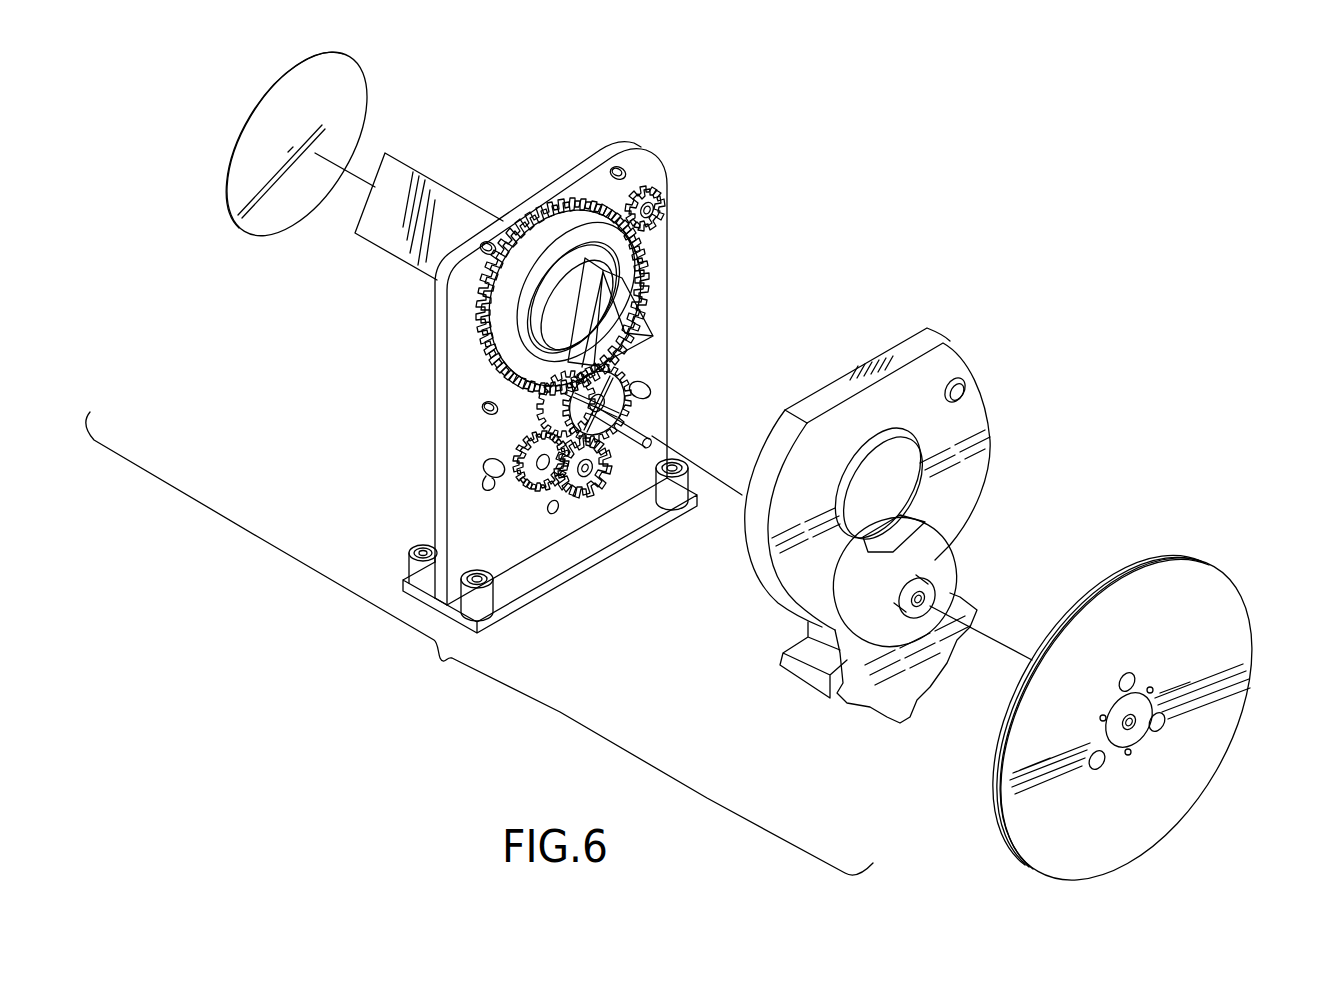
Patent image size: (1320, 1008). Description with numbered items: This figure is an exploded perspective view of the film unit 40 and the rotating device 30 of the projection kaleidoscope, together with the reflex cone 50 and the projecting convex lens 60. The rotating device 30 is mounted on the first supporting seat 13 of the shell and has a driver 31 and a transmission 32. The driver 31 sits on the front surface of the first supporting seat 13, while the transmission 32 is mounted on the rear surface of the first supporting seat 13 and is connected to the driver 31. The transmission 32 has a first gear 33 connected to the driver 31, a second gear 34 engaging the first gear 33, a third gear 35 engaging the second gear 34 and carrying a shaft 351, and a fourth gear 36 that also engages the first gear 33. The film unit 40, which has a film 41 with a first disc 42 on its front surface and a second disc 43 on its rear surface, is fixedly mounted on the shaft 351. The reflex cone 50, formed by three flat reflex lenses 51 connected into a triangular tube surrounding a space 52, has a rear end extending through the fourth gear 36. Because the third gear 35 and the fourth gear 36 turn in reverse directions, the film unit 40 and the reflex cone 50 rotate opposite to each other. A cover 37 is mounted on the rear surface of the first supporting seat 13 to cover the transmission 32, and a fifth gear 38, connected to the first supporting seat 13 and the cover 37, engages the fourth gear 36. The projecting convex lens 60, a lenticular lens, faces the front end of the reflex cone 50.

The first supporting seat 13 is at (436, 515).
The rotating device 30 is at (413, 352).
The driver 31 is at (435, 415).
The transmission 32 is at (606, 497).
The first gear 33 is at (541, 410).
The second gear 34 is at (566, 503).
The third gear 35 is at (640, 382).
The shaft 351 is at (660, 418).
The fourth gear 36 is at (648, 249).
The cover 37 is at (978, 450).
The fifth gear 38 is at (650, 183).
The film unit 40 is at (1240, 534).
The film 41 is at (1160, 554).
The first disc 42 is at (1127, 568).
The second disc 43 is at (1210, 592).
The reflex cone 50 is at (484, 186).
The flat reflex lens 51 is at (402, 177).
The space 52 is at (626, 332).
The projecting convex lens 60 is at (283, 217).